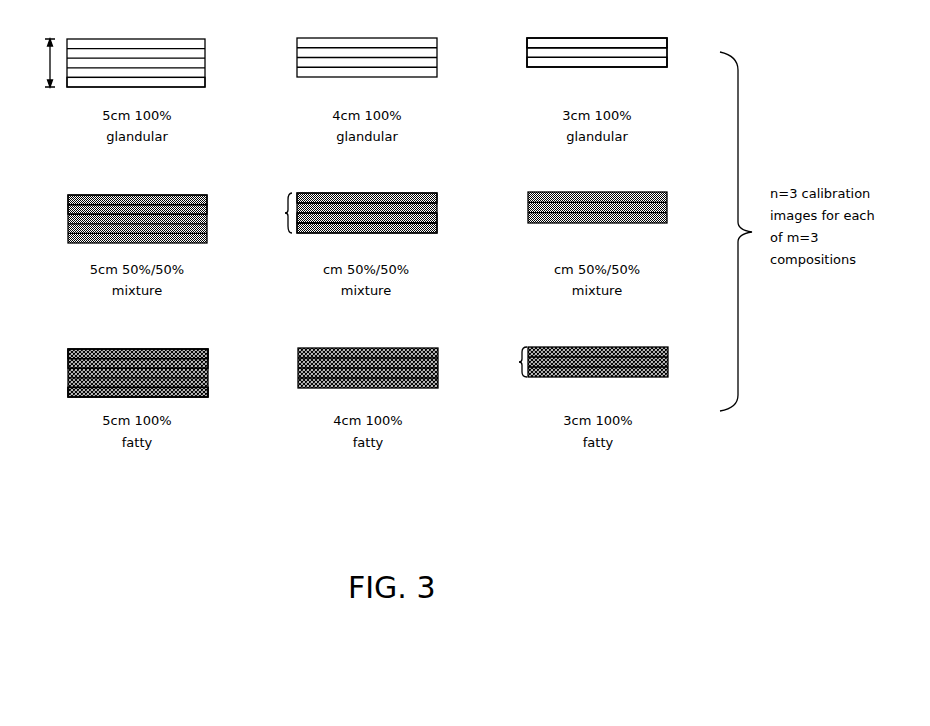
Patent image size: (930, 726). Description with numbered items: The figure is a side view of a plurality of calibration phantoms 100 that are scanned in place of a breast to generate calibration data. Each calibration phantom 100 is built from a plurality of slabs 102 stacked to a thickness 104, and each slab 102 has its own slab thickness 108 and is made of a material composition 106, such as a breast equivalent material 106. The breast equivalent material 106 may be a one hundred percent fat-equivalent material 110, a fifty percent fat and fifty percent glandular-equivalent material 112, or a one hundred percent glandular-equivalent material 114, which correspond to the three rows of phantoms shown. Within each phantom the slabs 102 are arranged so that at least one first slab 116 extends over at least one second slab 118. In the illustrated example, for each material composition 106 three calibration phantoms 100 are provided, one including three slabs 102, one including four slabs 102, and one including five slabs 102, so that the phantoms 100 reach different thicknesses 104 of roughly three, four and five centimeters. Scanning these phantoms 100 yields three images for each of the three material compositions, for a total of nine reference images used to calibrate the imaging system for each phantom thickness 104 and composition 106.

The calibration phantom 100 is at (177, 38).
The slab 102 is at (201, 80).
The thickness 104 is at (273, 208).
The material composition 106 is at (540, 38).
The slab thickness 108 is at (527, 48).
The 100% fat-equivalent material 110 is at (68, 393).
The 50% fat/50% glandular-equivalent material 112 is at (338, 229).
The 100% glandular-equivalent material 114 is at (630, 58).
The first slab 116 is at (69, 199).
The second slab 118 is at (68, 206).